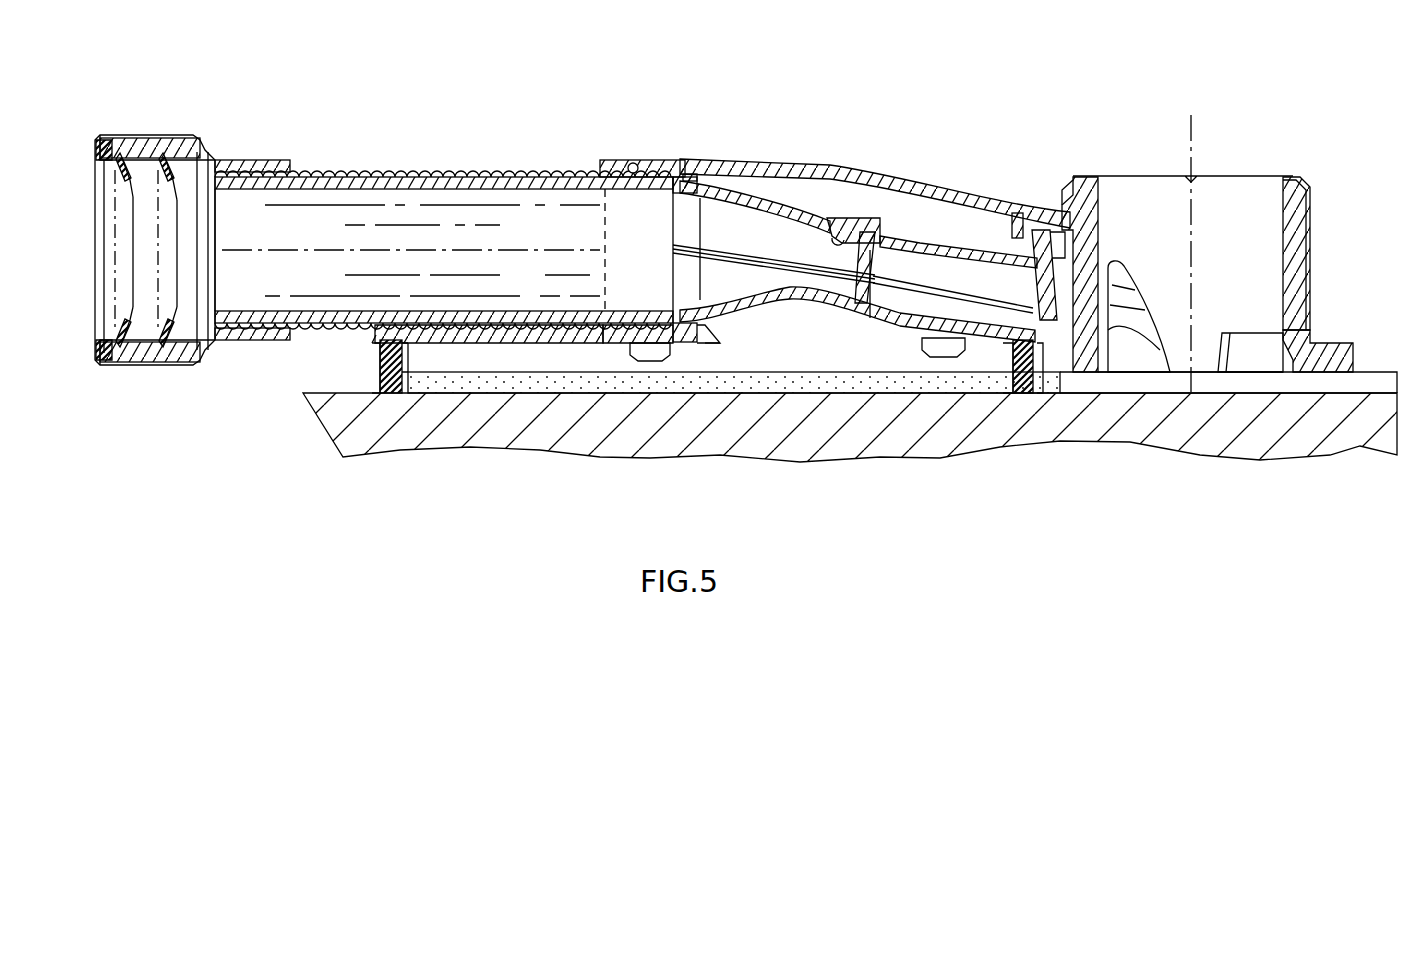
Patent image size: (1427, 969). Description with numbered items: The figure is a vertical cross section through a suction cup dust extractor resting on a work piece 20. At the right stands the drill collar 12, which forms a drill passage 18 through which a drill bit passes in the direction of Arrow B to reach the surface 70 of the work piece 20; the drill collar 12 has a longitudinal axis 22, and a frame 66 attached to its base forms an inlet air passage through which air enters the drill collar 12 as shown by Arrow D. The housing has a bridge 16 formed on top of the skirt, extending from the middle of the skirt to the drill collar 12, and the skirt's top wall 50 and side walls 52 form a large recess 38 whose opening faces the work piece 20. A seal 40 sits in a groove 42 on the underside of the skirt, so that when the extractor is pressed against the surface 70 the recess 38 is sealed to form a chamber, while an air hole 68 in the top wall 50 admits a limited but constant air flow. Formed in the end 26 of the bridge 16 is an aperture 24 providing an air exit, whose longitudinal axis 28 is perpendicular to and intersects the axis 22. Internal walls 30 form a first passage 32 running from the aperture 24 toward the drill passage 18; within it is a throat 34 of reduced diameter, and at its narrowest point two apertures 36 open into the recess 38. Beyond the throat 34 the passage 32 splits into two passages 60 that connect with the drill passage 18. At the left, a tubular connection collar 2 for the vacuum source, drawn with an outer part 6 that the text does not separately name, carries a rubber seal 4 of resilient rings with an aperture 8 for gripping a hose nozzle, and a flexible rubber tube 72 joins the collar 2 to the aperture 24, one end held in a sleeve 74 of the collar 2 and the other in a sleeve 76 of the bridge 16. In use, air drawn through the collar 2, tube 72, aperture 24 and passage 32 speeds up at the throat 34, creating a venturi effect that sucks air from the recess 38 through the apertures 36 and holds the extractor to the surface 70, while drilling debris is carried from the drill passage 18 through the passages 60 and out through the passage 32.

The connection collar 2 is at (181, 150).
The rubber seal 4 is at (166, 272).
The outer shell 6 is at (108, 142).
The aperture 8 is at (126, 253).
The drill collar 12 is at (1297, 235).
The bridge 16 is at (891, 176).
The drill passage 18 is at (1249, 246).
The work piece 20 is at (1113, 432).
The longitudinal axis 22 is at (1190, 292).
The aperture 24 is at (605, 225).
The end 26 is at (602, 166).
The longitudinal axis 28 is at (455, 253).
The internal walls 30 is at (745, 308).
The first passage 32 is at (720, 238).
The throat 34 is at (829, 220).
The apertures 36 is at (858, 290).
The recess 38 is at (760, 365).
The seal 40 is at (387, 385).
The groove 42 is at (409, 344).
The top wall 50 is at (448, 341).
The side walls 52 is at (380, 352).
The passages 60 is at (1135, 325).
The frame 66 is at (1340, 347).
The air hole 68 is at (570, 342).
The surface 70 is at (1266, 378).
The flexible tube 72 is at (430, 176).
The sleeve 74 is at (270, 173).
The sleeve 76 is at (634, 163).
The Arrow B is at (1120, 160).
The Arrow D is at (1228, 296).